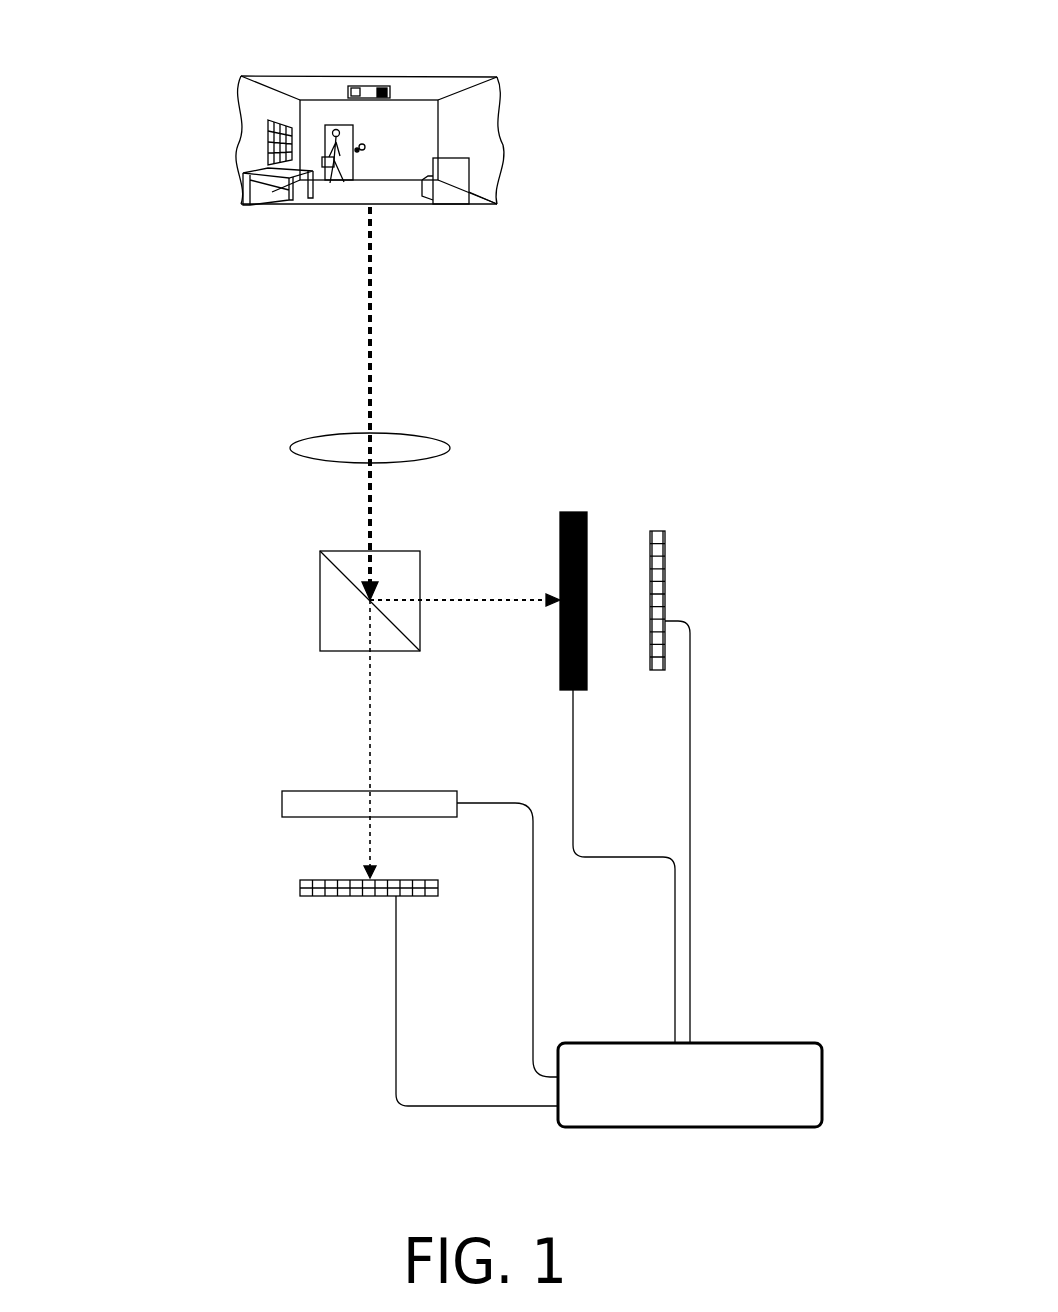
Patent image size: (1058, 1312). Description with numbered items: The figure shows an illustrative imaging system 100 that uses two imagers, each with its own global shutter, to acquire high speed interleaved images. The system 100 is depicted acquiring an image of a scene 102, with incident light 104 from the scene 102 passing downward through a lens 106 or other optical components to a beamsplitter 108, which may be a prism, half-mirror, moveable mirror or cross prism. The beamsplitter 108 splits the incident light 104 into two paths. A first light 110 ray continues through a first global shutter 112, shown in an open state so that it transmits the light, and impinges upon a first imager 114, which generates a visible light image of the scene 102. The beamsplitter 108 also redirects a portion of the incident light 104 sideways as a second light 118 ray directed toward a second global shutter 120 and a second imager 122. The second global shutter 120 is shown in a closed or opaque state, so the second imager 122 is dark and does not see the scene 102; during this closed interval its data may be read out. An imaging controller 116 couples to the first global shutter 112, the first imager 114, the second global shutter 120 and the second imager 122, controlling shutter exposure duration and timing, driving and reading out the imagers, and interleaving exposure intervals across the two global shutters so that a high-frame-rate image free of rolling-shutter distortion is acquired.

The imaging system 100 is at (791, 29).
The scene 102 is at (523, 106).
The incident light 104 is at (380, 299).
The lens 106 is at (317, 433).
The beamsplitter 108 is at (348, 551).
The first light 110 is at (368, 722).
The first global shutter 112 is at (300, 791).
The first imager 114 is at (305, 894).
The imaging controller 116 is at (690, 1085).
The second light 118 is at (465, 598).
The second global shutter 120 is at (587, 512).
The second imager 122 is at (665, 555).